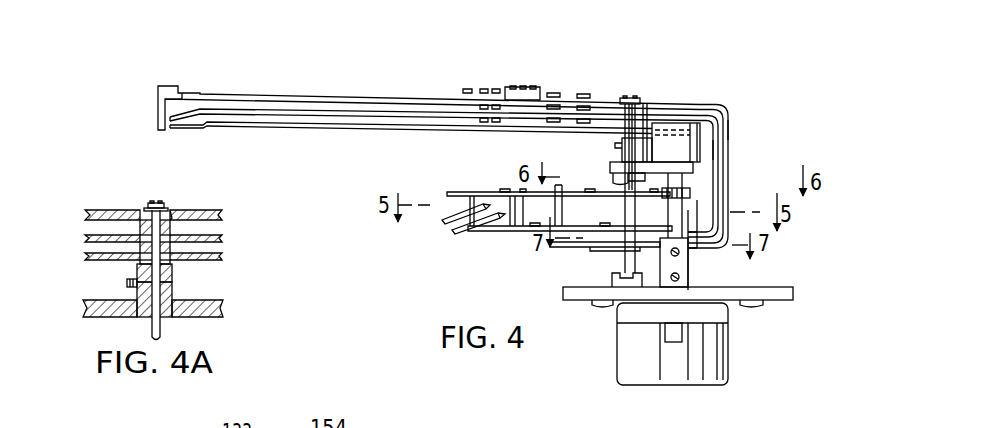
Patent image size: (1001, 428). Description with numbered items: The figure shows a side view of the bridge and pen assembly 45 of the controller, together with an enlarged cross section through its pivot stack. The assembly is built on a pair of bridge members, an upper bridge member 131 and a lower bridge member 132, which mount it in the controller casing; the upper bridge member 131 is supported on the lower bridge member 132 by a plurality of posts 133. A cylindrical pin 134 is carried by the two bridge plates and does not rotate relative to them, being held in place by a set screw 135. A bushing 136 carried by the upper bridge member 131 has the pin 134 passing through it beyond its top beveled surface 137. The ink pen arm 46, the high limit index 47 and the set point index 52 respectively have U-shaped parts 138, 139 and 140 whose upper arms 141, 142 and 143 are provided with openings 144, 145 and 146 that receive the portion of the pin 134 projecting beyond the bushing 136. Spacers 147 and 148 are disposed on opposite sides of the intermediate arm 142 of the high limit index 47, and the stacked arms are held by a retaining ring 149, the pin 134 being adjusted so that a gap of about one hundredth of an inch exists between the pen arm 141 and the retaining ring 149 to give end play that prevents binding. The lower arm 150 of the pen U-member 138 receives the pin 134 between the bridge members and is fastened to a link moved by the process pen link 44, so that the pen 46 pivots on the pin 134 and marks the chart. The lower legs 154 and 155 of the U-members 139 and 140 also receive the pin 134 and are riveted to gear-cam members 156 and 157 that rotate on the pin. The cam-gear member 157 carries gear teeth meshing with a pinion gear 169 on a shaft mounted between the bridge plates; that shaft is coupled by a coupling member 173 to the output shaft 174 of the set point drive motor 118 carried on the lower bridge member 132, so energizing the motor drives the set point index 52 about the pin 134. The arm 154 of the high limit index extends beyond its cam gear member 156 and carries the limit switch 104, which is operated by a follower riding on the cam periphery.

In FIG. 4, the bridge and pen assembly 45 is at (692, 85).
In FIG. 4, the ink pen arm 46 is at (378, 92).
In FIG. 4, the high limit index 47 is at (405, 108).
In FIG. 4, the set point index 52 is at (345, 127).
In FIG. 4, the limit switch 104 is at (492, 229).
In FIG. 4, the set point drive motor 118 is at (720, 355).
In FIG. 4, the upper bridge member 131 is at (645, 118).
In FIG. 4A, the upper bridge member 131 is at (214, 319).
In FIG. 4, the lower bridge member 132 is at (582, 292).
In FIG. 4, the posts 133 is at (611, 280).
In FIG. 4, the cylindrical pin 134 is at (626, 208).
In FIG. 4A, the cylindrical pin 134 is at (148, 327).
In FIG. 4A, the set screw 135 is at (136, 286).
In FIG. 4, the bushing 136 is at (617, 151).
In FIG. 4A, the bushing 136 is at (173, 292).
In FIG. 4A, the top beveled surface 137 is at (173, 267).
In FIG. 4, the U-shaped part 138 is at (730, 125).
In FIG. 4, the U-shaped part 139 is at (716, 151).
In FIG. 4, the U-shaped part 140 is at (697, 181).
In FIG. 4, the upper arm 141 is at (694, 107).
In FIG. 4A, the upper arm 141 is at (209, 212).
In FIG. 4, the intermediate arm 142 is at (698, 118).
In FIG. 4A, the intermediate arm 142 is at (210, 237).
In FIG. 4, the upper arm 143 is at (655, 123).
In FIG. 4A, the upper arm 143 is at (146, 246).
In FIG. 4A, the opening 144 is at (146, 209).
In FIG. 4A, the opening 145 is at (146, 220).
In FIG. 4A, the opening 146 is at (146, 262).
In FIG. 4A, the spacer 147 is at (182, 212).
In FIG. 4A, the spacer 148 is at (168, 247).
In FIG. 4, the retaining ring 149 is at (627, 102).
In FIG. 4A, the retaining ring 149 is at (149, 206).
In FIG. 4, the lower arm 150 is at (697, 273).
In FIG. 4, the lower leg 154 is at (697, 248).
In FIG. 4, the lower leg 155 is at (730, 218).
In FIG. 4, the gear-cam member 156 is at (559, 208).
In FIG. 4, the gear-cam member 157 is at (611, 184).
In FIG. 4, the pinion gear 169 is at (693, 192).
In FIG. 4, the coupling member 173 is at (689, 274).
In FIG. 4, the output shaft 174 is at (667, 332).
In FIG. 4, the process pen link 44 is at (603, 249).